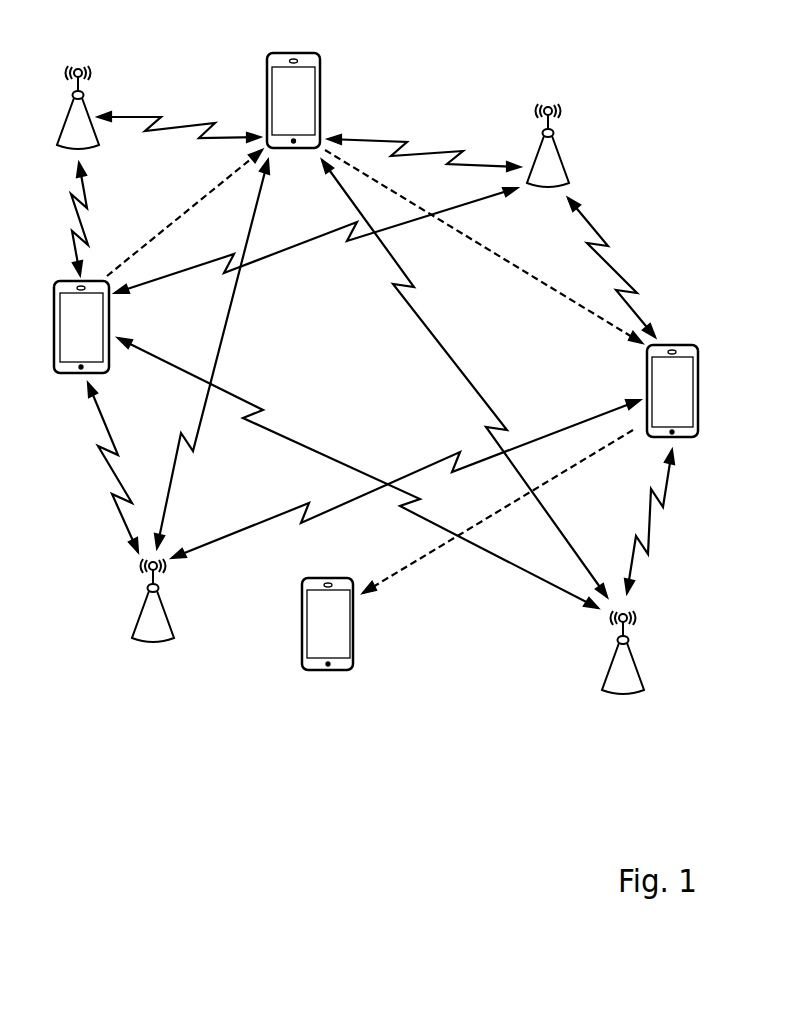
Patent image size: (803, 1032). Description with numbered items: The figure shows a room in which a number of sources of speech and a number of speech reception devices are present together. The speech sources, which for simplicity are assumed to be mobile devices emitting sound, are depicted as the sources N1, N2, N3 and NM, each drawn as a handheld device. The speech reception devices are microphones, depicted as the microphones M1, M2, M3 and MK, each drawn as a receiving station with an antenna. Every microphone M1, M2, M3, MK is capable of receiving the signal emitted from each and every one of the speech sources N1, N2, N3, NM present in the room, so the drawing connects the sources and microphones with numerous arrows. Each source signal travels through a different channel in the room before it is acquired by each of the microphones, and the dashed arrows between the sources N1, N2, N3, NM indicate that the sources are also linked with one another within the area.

The microphone M1 is at (78, 86).
The microphone M2 is at (548, 125).
The microphone M3 is at (153, 621).
The microphone MK is at (623, 674).
The speech source N1 is at (76, 346).
The speech source N2 is at (293, 82).
The speech source N3 is at (672, 368).
The speech source NM is at (327, 646).